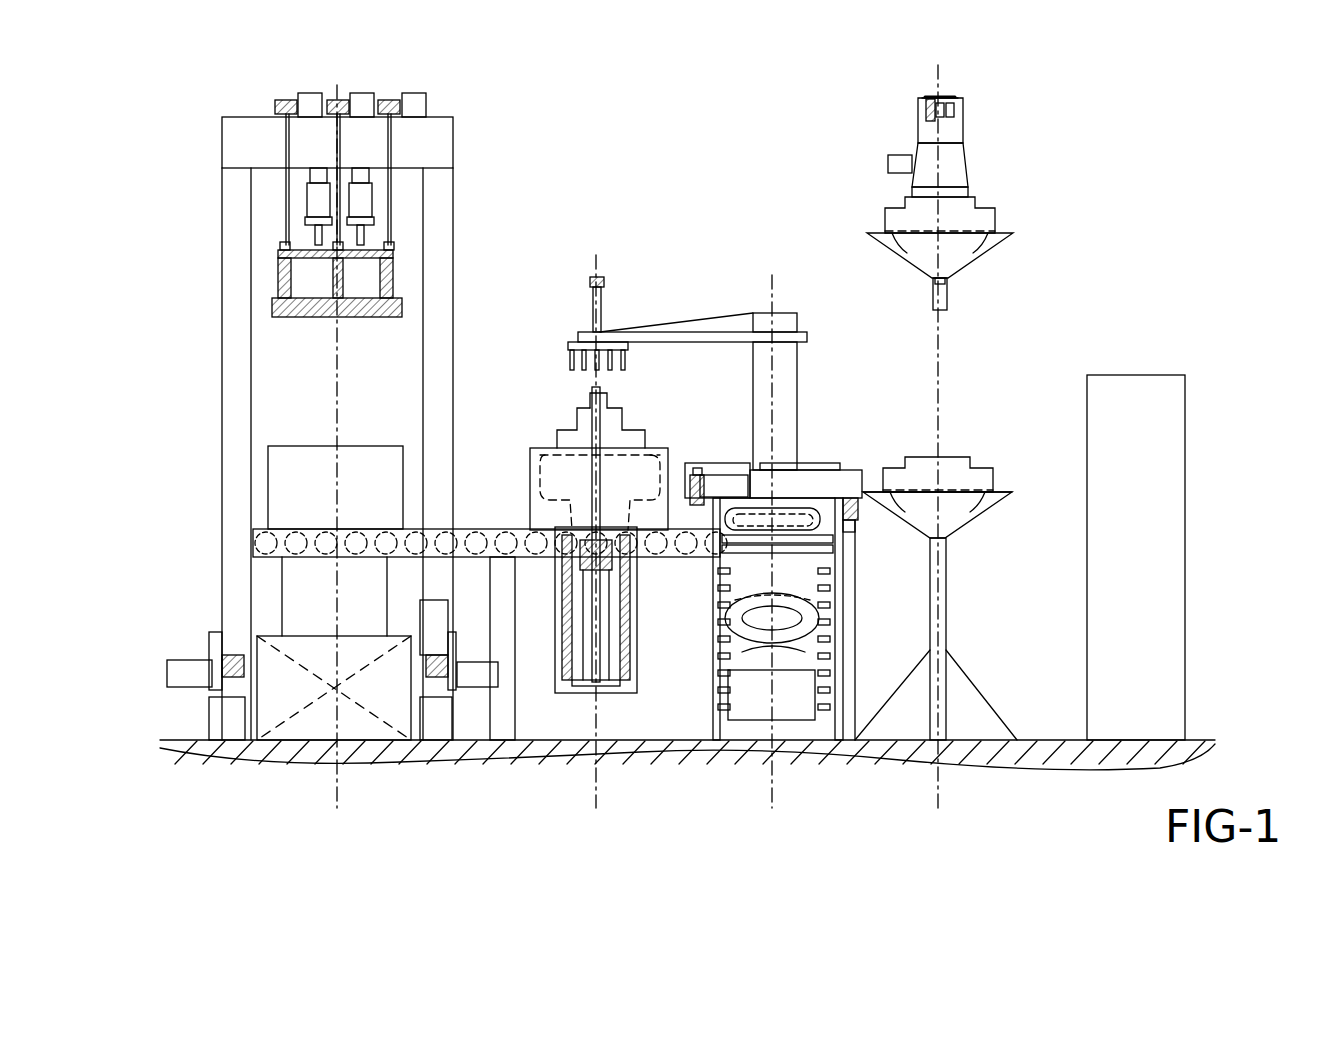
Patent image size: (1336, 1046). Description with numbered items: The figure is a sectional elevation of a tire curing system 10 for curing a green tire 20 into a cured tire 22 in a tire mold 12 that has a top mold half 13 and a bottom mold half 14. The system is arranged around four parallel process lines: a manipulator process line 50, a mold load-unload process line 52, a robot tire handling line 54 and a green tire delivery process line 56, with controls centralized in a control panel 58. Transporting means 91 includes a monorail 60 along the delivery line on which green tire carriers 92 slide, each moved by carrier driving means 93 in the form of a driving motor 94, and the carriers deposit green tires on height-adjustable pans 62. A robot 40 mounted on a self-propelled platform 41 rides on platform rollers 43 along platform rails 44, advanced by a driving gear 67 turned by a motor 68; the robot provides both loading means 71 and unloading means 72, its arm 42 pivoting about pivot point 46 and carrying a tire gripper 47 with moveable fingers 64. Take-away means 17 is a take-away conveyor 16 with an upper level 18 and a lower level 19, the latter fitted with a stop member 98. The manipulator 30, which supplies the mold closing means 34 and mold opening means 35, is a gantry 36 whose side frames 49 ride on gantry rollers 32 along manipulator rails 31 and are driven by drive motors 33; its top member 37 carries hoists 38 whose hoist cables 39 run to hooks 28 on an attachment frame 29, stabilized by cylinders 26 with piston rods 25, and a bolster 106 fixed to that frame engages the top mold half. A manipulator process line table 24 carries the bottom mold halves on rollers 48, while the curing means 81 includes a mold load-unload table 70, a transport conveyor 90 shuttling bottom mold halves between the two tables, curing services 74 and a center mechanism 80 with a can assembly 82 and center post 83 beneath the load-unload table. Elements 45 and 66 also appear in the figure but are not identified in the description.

The tire curing system 10 is at (135, 183).
The tire mold 12 is at (530, 450).
The top mold half 13 is at (275, 315).
The bottom mold half 14 is at (548, 446).
The take-away conveyor 16 is at (790, 549).
The take-away means 17 is at (870, 642).
The upper level 18 is at (748, 548).
The lower level 19 is at (815, 685).
The green tire 20 is at (938, 318).
The cured tire 22 is at (800, 603).
The manipulator process line table 24 is at (490, 582).
The piston rods 25 is at (318, 238).
The cylinders 26 is at (310, 195).
The hooks 28 is at (285, 250).
The attachment frame 29 is at (390, 275).
The manipulator 30 is at (367, 395).
The manipulator rails 31 is at (222, 690).
The gantry rollers 32 is at (225, 672).
The drive motors 33 is at (175, 672).
The mold closing means 34 is at (133, 228).
The mold opening means 35 is at (133, 270).
The gantry 36 is at (453, 222).
The top member 37 is at (232, 117).
The hoists 38 is at (305, 93).
The hoist cables 39 is at (286, 160).
The robot 40 is at (719, 340).
The platform 41 is at (790, 470).
The arm 42 is at (672, 328).
The platform rollers 43 is at (858, 510).
The platform rails 44 is at (850, 528).
The robot column 45 is at (690, 410).
The pivot point 46 is at (778, 313).
The tire gripper 47 is at (570, 345).
The rollers 48 is at (356, 538).
The side frames 49 is at (225, 410).
The manipulator process line 50 is at (340, 800).
The mold load-unload process line 52 is at (602, 800).
The robot tire handling line 54 is at (778, 800).
The green tire delivery process line 56 is at (944, 800).
The control panel 58 is at (1136, 557).
The monorail 60 is at (945, 97).
The pans 62 is at (948, 522).
The moveable fingers 64 is at (568, 360).
The bearing 66 is at (693, 500).
The driving gear 67 is at (698, 470).
The motor 68 is at (742, 480).
The mold load-unload table 70 is at (525, 553).
The loading means 71 is at (566, 296).
The unloading means 72 is at (630, 272).
The curing services 74 is at (272, 712).
The center mechanism 80 is at (572, 740).
The curing means 81 is at (460, 775).
The can assembly 82 is at (630, 680).
The center post 83 is at (590, 397).
The transport conveyor 90 is at (483, 529).
The transporting means 91 is at (912, 140).
The green tire carriers 92 is at (958, 163).
The carrier driving means 93 is at (885, 182).
The driving motor 94 is at (888, 163).
The stop member 98 is at (800, 710).
The bolster 106 is at (272, 302).